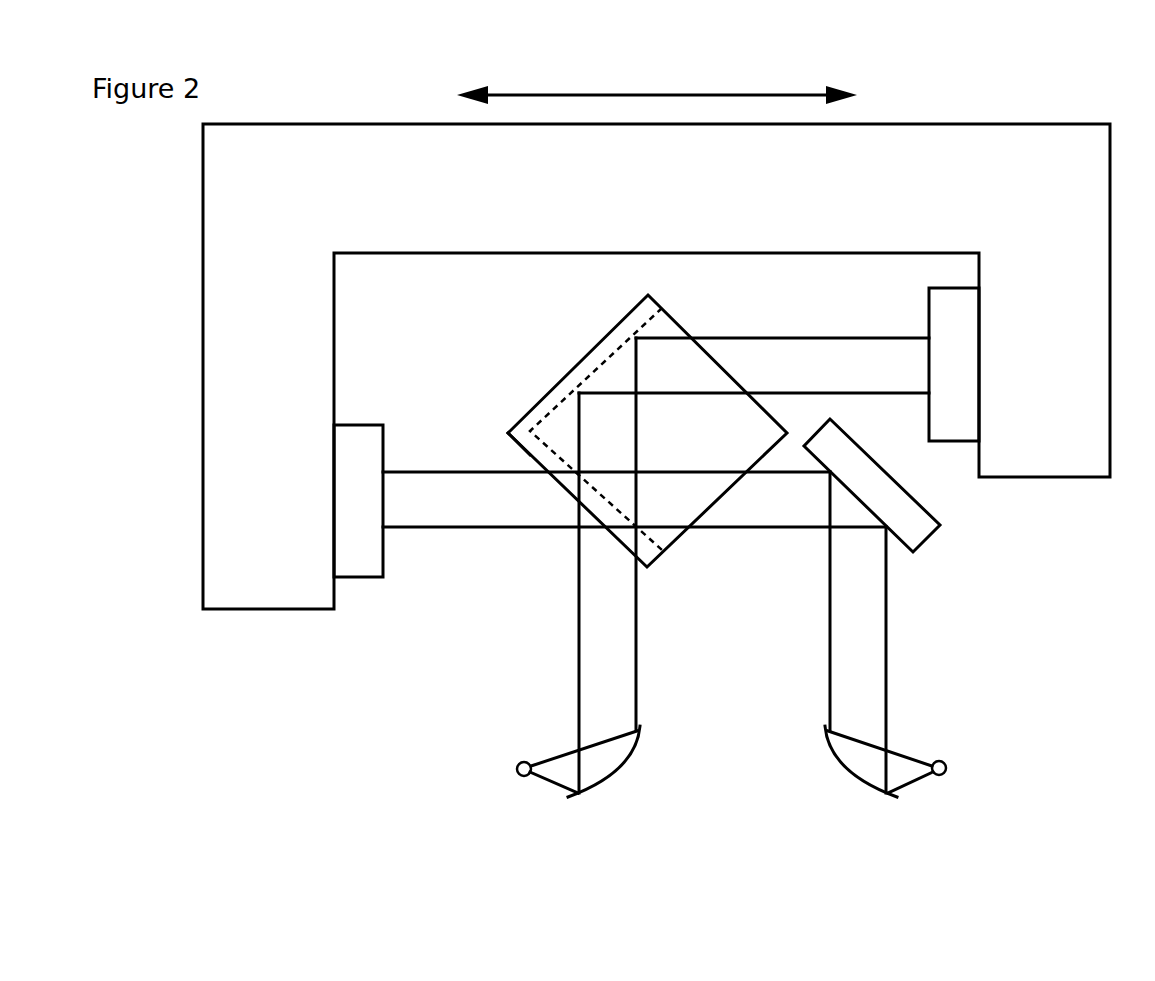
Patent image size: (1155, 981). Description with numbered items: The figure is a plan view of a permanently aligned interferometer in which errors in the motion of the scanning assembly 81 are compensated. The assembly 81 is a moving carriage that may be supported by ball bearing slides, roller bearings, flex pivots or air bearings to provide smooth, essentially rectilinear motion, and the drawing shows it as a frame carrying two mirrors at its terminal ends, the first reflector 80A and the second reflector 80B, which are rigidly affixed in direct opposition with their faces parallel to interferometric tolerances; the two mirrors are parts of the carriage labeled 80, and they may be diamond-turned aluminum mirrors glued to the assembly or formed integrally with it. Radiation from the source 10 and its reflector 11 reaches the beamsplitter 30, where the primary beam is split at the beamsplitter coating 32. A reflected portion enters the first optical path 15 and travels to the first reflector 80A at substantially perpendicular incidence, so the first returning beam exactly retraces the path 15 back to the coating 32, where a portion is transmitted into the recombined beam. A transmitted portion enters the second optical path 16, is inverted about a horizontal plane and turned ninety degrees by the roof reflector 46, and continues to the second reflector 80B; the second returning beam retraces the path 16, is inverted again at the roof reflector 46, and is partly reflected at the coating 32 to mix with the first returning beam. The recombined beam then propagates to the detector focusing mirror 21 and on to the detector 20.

The first light source 10 is at (517, 769).
The first reflector 11 is at (618, 765).
The first optical path 15 is at (500, 501).
The second optical path 16 is at (798, 353).
The detector 20 is at (947, 765).
The detector focusing mirror 21 is at (848, 766).
The beamsplitter 30 is at (660, 555).
The beamsplitter coating 32 is at (550, 447).
The roof reflector/beamsplitter mounting monolith 46 is at (590, 353).
The movable frame 80 is at (658, 479).
The first reflector 80A is at (384, 561).
The second reflector 80B is at (922, 430).
The scanning assembly 81 is at (771, 256).